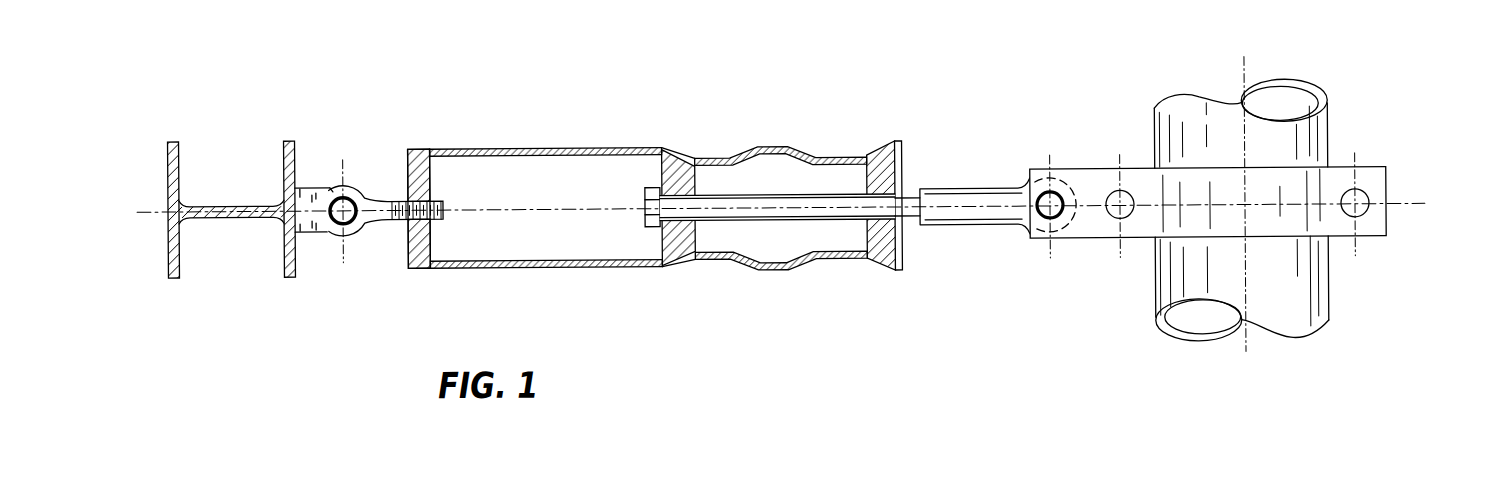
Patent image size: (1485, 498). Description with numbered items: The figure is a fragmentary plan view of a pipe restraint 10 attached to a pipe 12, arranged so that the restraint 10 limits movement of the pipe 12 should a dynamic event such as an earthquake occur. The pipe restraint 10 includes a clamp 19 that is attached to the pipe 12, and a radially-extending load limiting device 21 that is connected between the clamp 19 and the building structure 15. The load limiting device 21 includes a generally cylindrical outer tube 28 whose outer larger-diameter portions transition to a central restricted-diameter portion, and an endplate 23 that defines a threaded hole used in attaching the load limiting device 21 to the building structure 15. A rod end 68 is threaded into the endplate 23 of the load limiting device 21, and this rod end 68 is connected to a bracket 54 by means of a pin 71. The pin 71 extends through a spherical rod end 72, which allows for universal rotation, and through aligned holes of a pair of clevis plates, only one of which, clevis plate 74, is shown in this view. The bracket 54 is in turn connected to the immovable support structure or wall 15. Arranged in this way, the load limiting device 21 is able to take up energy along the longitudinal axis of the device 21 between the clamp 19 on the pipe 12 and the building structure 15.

The pipe restraint 10 is at (945, 132).
The pipe 12 is at (1312, 141).
The building structure 15 is at (291, 275).
The clamp 19 is at (1088, 224).
The load limiting device 21 is at (641, 273).
The endplate 23 is at (407, 168).
The outer tube 28 is at (575, 146).
The bracket 54 is at (317, 222).
The rod end 68 is at (375, 180).
The pin 71 is at (363, 225).
The spherical rod end 72 is at (327, 180).
The clevis plate 74 is at (310, 185).